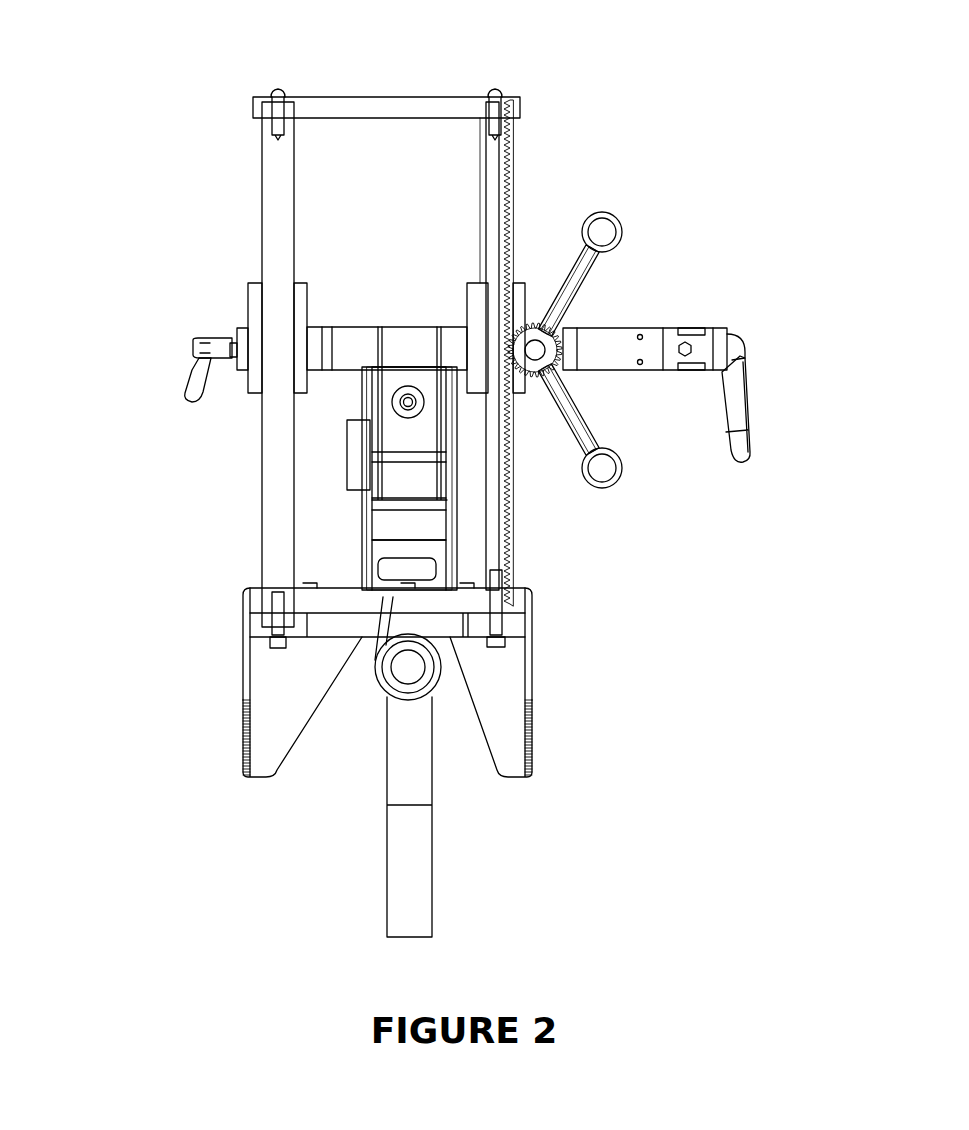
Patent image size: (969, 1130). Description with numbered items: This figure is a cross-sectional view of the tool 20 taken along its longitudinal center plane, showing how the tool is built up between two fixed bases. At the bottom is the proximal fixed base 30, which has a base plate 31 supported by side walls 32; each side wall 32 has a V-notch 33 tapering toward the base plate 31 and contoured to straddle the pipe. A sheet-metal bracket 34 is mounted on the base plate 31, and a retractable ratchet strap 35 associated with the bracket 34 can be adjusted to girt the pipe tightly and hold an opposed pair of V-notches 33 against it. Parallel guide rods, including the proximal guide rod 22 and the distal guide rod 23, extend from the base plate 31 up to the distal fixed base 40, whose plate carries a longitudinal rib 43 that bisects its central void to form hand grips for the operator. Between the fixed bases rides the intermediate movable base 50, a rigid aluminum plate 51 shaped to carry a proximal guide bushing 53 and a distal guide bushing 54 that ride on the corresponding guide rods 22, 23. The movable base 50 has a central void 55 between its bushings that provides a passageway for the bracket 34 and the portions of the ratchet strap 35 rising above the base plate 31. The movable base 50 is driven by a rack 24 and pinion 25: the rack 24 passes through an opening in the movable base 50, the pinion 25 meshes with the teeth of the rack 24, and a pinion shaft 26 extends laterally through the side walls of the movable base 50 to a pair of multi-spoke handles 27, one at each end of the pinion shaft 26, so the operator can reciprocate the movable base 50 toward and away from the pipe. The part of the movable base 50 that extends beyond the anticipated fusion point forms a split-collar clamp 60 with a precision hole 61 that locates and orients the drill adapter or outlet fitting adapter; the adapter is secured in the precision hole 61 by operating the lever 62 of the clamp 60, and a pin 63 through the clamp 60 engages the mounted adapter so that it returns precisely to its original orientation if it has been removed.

The tool 20 is at (113, 82).
The guide rod 22 is at (478, 152).
The guide rod 23 is at (268, 245).
The rack 24 is at (499, 207).
The pinion 25 is at (550, 340).
The pinion shaft 26 is at (538, 353).
The multi-spoke handle 27 is at (602, 232).
The proximal fixed base 30 is at (156, 730).
The base plate 31 is at (528, 592).
The side wall 32 is at (243, 665).
The V-notch 33 is at (243, 745).
The bracket 34 is at (357, 483).
The retractable ratchet strap 35 is at (420, 853).
The distal fixed base 40 is at (325, 62).
The longitudinal rib 43 is at (400, 103).
The intermediate movable base 50 is at (110, 377).
The plate 51 is at (318, 327).
The proximal guide bushing 53 is at (465, 303).
The distal guide bushing 54 is at (303, 282).
The central void 55 is at (358, 338).
The split-collar clamp 60 is at (763, 304).
The precision hole 61 is at (613, 347).
The lever 62 is at (730, 407).
The pin 63 is at (640, 337).